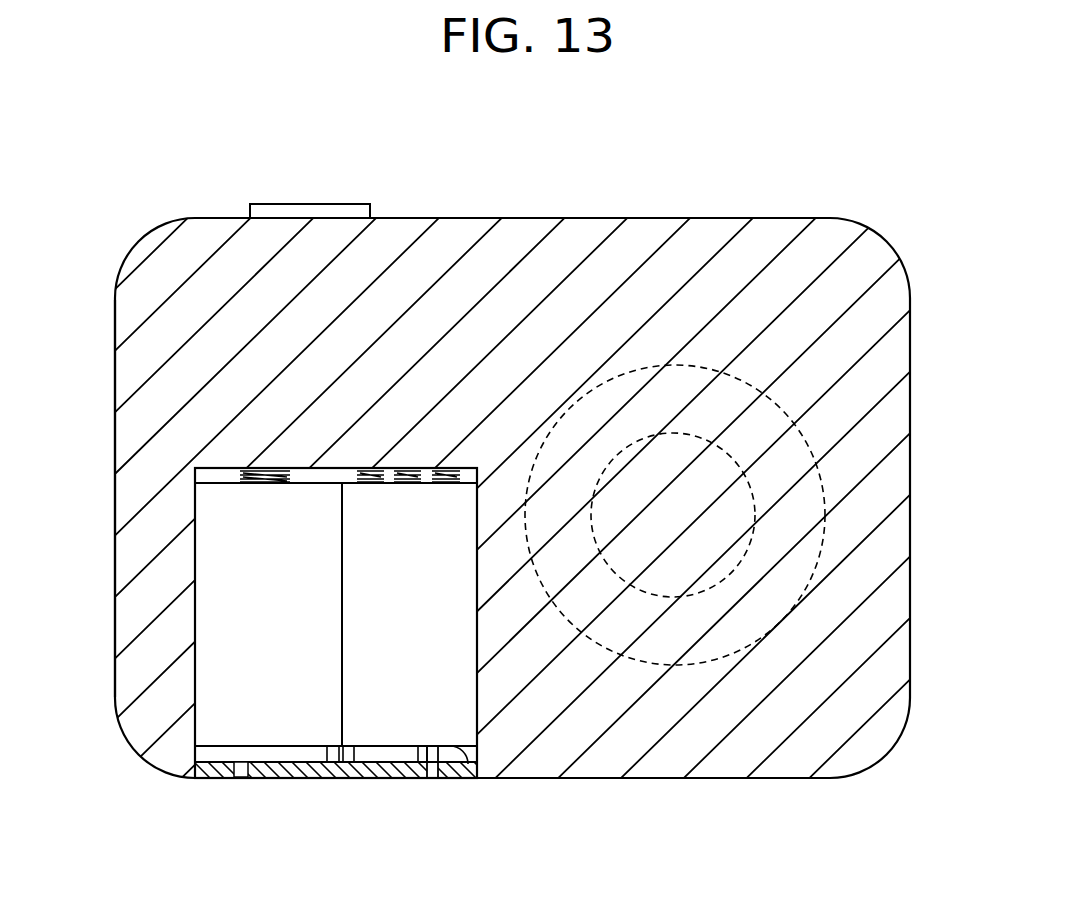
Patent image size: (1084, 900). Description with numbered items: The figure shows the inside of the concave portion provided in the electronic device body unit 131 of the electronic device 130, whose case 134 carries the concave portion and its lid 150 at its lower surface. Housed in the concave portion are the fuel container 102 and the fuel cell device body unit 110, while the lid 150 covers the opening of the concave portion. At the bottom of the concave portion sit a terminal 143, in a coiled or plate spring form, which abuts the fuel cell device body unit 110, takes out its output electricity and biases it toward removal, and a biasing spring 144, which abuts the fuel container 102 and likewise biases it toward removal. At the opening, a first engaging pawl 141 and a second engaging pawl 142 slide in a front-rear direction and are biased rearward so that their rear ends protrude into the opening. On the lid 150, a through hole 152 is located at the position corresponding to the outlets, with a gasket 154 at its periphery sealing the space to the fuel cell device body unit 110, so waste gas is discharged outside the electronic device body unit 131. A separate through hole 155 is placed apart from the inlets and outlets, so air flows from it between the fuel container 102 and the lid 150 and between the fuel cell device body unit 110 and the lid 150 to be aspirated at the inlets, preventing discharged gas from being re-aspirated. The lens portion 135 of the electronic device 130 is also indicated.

The electronic device 130 is at (857, 119).
The electronic device body unit 131 is at (528, 218).
The case 134 is at (528, 218).
The lens unit 135 is at (720, 373).
The fuel container 102 is at (195, 608).
The fuel cell device body unit 110 is at (394, 726).
The lid 150 is at (304, 770).
The through hole 155 is at (240, 770).
The biasing spring 144 is at (271, 483).
The terminal 143 is at (367, 483).
The second engaging pawl 142 is at (333, 745).
The first engaging pawl 141 is at (347, 745).
The through hole 152 is at (437, 745).
The gasket 154 is at (460, 775).